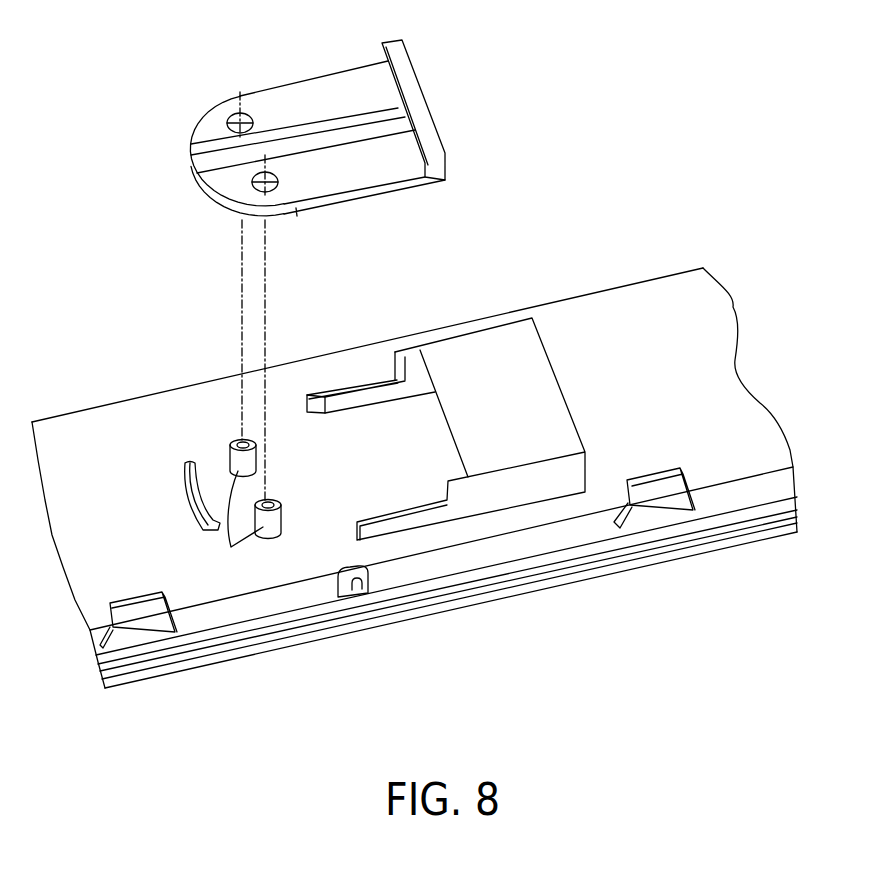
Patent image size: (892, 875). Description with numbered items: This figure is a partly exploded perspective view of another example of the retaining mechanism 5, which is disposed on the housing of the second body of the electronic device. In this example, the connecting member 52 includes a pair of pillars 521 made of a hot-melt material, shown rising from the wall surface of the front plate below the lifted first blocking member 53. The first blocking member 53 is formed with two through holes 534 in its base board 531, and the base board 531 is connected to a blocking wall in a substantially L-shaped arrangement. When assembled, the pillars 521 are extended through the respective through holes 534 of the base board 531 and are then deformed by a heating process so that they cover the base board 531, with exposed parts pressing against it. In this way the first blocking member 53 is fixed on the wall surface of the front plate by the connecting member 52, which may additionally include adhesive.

The retaining mechanism 5 is at (538, 167).
The connecting member 52 is at (228, 430).
The pillars 521 is at (224, 523).
The first blocking member 53 is at (301, 108).
The base board 531 is at (330, 95).
The through holes 534 is at (252, 178).